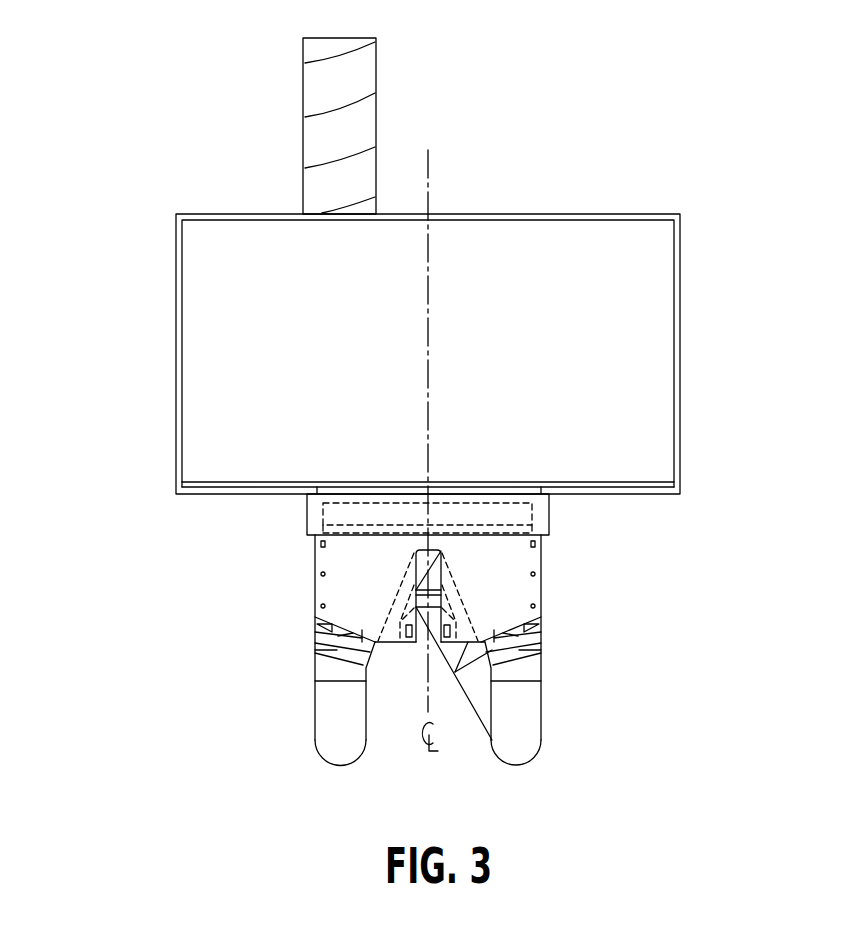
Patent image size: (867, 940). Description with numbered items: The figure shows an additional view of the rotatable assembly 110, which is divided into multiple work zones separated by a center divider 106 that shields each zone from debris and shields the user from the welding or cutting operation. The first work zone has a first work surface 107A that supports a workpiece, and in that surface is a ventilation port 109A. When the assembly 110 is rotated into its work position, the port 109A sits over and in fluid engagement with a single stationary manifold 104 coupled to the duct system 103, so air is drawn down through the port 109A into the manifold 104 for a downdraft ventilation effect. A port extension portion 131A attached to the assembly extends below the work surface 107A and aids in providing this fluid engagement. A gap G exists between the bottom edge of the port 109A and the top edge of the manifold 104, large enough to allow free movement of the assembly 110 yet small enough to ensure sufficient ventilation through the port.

The assembly 110 is at (142, 292).
The duct system 103 is at (366, 77).
The center divider 106 is at (606, 240).
The ventilation port 109A is at (483, 488).
The first work surface 107A is at (610, 487).
The port extension portion 131A is at (549, 516).
The manifold 104 is at (541, 575).
The gap G is at (315, 535).